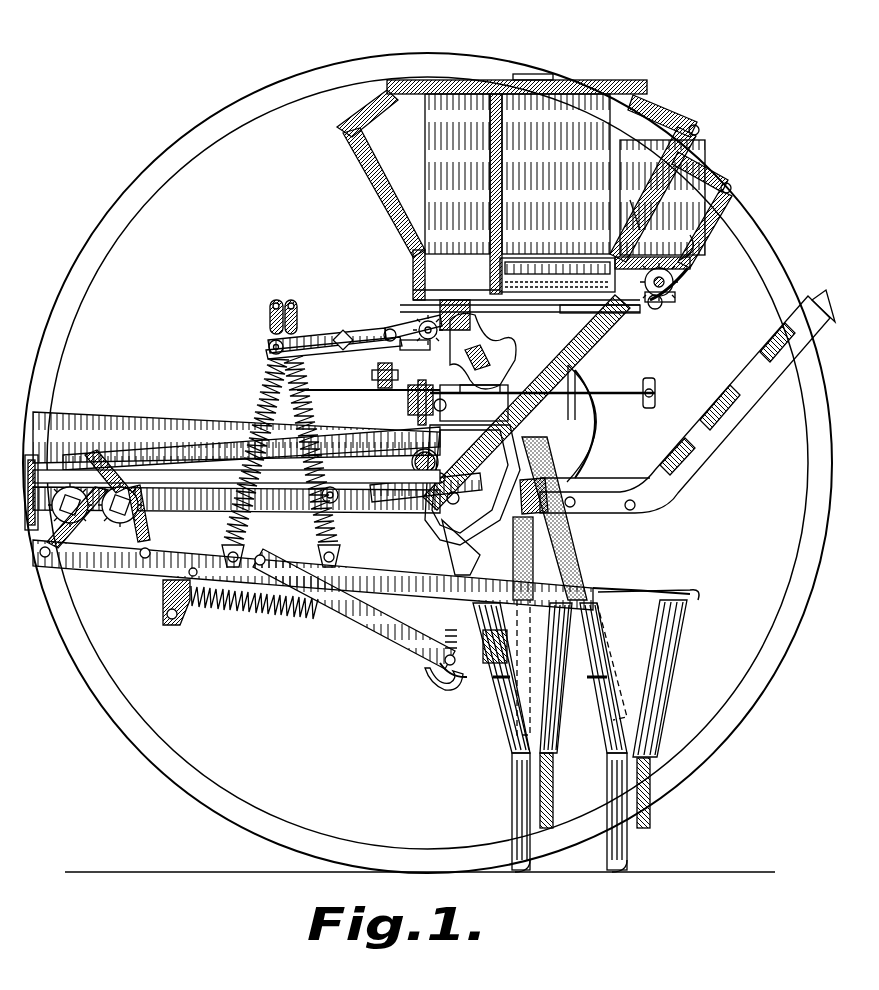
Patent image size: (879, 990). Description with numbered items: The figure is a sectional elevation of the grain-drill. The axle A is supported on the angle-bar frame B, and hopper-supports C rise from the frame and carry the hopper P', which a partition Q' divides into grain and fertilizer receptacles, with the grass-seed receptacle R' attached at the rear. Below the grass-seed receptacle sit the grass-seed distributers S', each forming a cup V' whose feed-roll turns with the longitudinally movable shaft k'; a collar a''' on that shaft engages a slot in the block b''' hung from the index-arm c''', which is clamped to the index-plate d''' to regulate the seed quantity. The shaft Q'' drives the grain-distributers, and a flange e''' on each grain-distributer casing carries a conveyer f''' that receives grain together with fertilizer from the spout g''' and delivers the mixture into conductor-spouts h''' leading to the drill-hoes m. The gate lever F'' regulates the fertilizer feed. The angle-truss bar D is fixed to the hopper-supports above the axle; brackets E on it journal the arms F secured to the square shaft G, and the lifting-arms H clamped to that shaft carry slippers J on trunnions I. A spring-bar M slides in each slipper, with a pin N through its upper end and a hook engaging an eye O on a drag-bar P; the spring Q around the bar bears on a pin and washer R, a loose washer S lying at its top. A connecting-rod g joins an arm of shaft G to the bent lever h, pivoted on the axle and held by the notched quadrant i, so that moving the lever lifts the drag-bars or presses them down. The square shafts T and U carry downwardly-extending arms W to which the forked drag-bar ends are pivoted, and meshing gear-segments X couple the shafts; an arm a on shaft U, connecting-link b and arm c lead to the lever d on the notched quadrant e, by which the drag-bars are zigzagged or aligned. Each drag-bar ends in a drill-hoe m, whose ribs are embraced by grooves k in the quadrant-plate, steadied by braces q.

The hopper P' is at (521, 161).
The partition Q' is at (554, 158).
The shaft Q'' is at (399, 252).
The grass-seed receptacle R' is at (711, 226).
The grass-seed-distributer shaft k' is at (617, 192).
The index-plate d''' is at (733, 268).
The index-arm c''' is at (691, 285).
The block b''' is at (744, 282).
The collar a''' is at (691, 304).
The conveyer f''' is at (676, 332).
The grass-seed distributers S' is at (663, 326).
The spout g''' is at (679, 360).
The cup V' is at (705, 384).
The flange e''' is at (489, 351).
The lifting-arms H is at (262, 317).
The trunnions I is at (262, 345).
The slipper J is at (268, 378).
The square shaft G is at (337, 330).
The pin N is at (292, 330).
The arms F is at (364, 282).
The connecting-rod g is at (386, 287).
The brackets E is at (405, 345).
The spring-bar M is at (297, 390).
The loose washer S is at (364, 377).
The angle-truss bar D is at (408, 400).
The lever d is at (548, 397).
The arm c is at (463, 402).
The hopper-supports C is at (593, 427).
The notched quadrant e is at (466, 489).
The notched quadrant i is at (480, 543).
The axle A is at (377, 475).
The grooves k is at (345, 527).
The lever F'' is at (687, 401).
The bent lever h is at (609, 506).
The conductor-spouts h''' is at (586, 518).
The angle-bar frame B is at (176, 500).
The arm a is at (236, 440).
The connecting-link b is at (232, 459).
The spring Q is at (192, 452).
The square shaft U is at (80, 517).
The eye O is at (137, 517).
The pin and washer R is at (259, 461).
The square shaft T is at (70, 555).
The downwardly-extending arms W is at (55, 560).
The gear-segments X is at (205, 560).
The drag-bars P is at (240, 618).
The braces q is at (385, 640).
The drill-hoe m is at (502, 717).